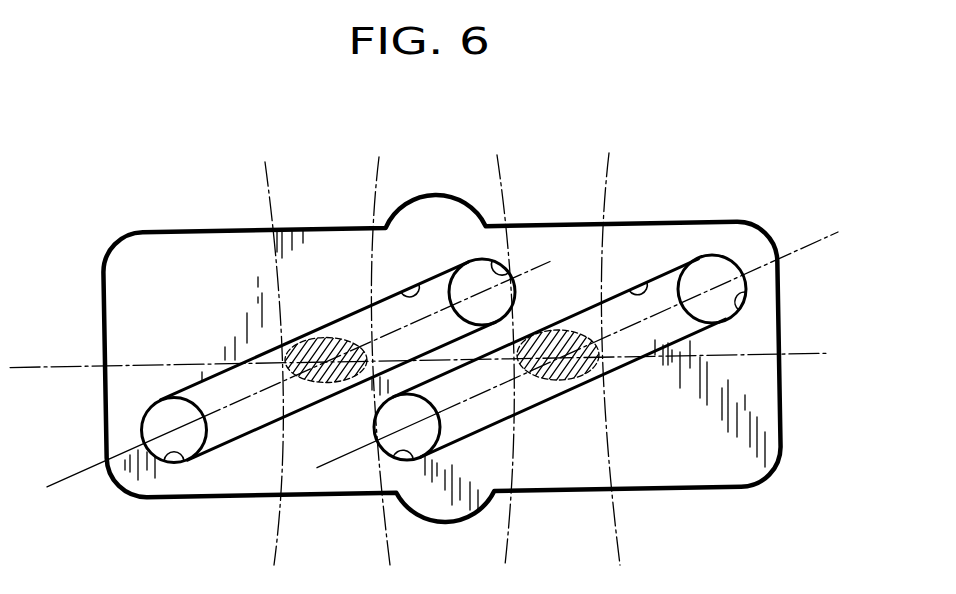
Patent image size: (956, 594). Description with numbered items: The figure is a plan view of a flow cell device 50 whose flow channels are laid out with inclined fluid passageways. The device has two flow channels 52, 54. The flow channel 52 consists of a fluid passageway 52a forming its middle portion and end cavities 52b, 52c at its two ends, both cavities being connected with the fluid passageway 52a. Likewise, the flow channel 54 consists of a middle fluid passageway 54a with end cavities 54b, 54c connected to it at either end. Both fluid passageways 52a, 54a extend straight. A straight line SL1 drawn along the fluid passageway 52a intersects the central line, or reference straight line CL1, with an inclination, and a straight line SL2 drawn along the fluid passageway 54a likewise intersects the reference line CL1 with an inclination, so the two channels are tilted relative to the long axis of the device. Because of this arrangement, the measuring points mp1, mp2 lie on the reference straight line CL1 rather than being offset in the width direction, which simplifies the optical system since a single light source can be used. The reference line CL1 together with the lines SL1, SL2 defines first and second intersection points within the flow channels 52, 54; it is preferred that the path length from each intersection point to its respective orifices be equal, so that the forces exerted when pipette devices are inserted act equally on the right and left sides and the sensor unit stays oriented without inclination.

The flow cell device 50 is at (560, 175).
The flow channel 52 is at (237, 327).
The fluid passageway 52a is at (412, 288).
The end cavity 52b is at (168, 462).
The end cavity 52c is at (507, 262).
The flow channel 54 is at (633, 373).
The fluid passageway 54a is at (642, 287).
The end cavity 54b is at (413, 458).
The end cavity 54c is at (742, 308).
The measuring point mp1 is at (326, 389).
The measuring point mp2 is at (558, 382).
The reference straight line CL1 is at (57, 366).
The straight line SL1 is at (92, 467).
The straight line SL2 is at (342, 457).